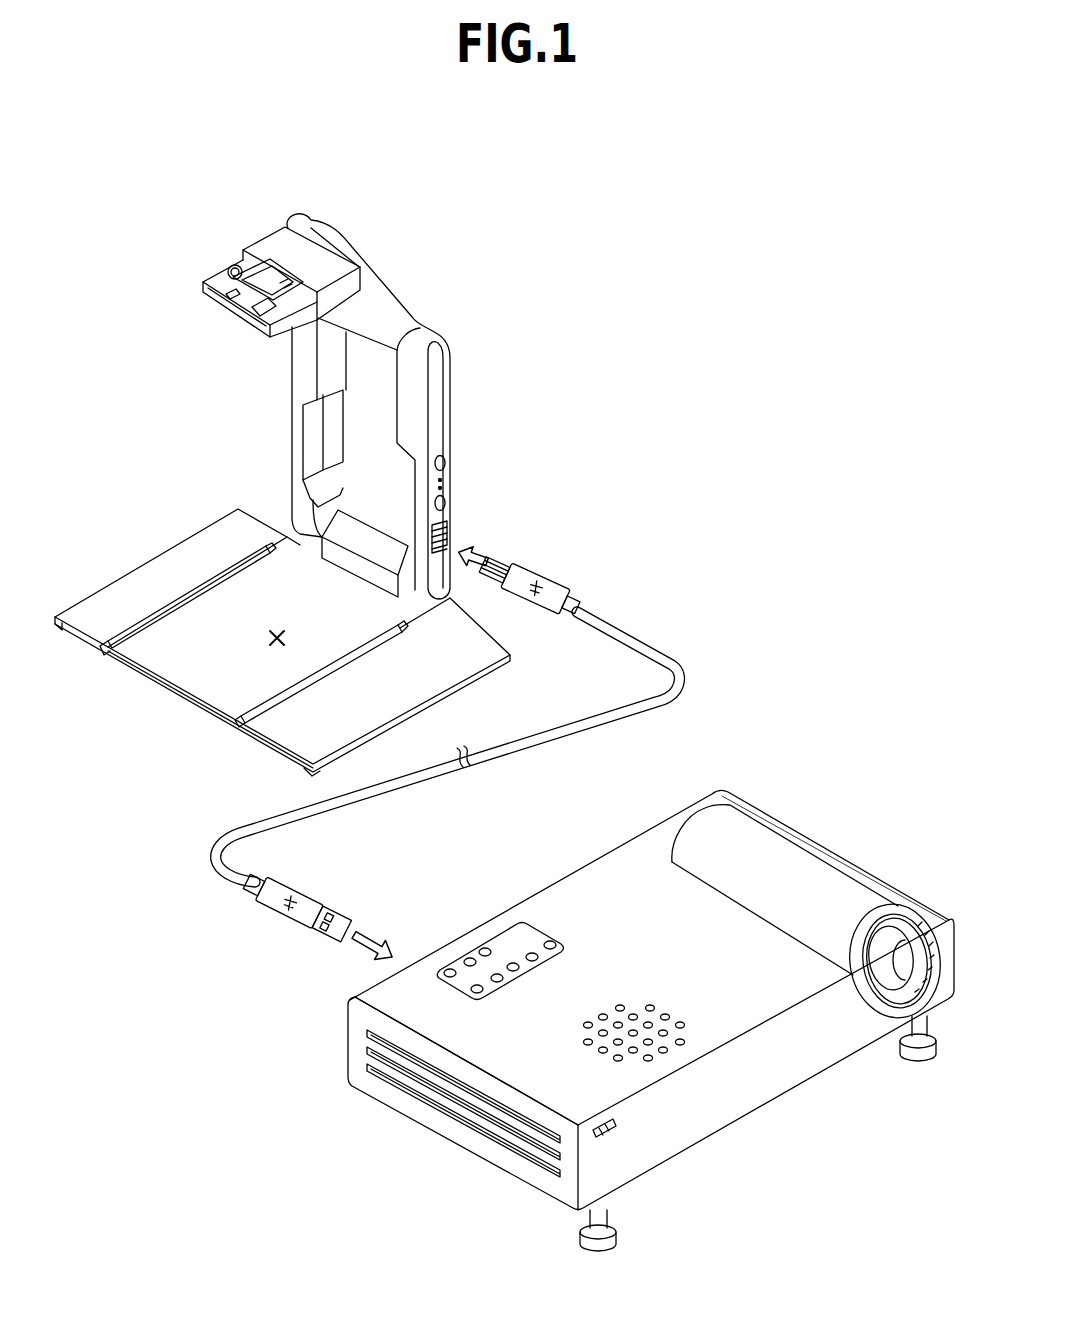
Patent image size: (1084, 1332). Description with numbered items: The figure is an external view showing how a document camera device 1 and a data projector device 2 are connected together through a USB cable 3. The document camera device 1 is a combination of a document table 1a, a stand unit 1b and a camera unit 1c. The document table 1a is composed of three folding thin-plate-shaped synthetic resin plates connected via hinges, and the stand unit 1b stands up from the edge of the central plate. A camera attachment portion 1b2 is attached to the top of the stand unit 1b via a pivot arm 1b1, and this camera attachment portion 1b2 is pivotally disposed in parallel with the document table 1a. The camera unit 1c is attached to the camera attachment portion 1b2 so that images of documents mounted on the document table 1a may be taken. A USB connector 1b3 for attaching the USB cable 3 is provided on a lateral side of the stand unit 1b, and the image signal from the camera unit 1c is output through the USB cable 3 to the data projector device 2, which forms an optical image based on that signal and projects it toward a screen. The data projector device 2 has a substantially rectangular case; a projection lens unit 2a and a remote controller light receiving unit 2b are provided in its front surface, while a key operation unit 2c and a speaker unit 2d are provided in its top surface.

The document camera device 1 is at (410, 206).
The document table 1a is at (203, 670).
The stand unit 1b is at (292, 430).
The pivot arm 1b1 is at (400, 292).
The camera attachment portion 1b2 is at (262, 240).
The USB connector 1b3 is at (445, 530).
The camera unit 1c is at (211, 298).
The data projector device 2 is at (795, 778).
The projection lens 2a is at (858, 995).
The remote controller light receiving unit 2b is at (613, 1131).
The key operation unit 2c is at (508, 938).
The speaker unit 2d is at (676, 1047).
The USB cable 3 is at (630, 630).